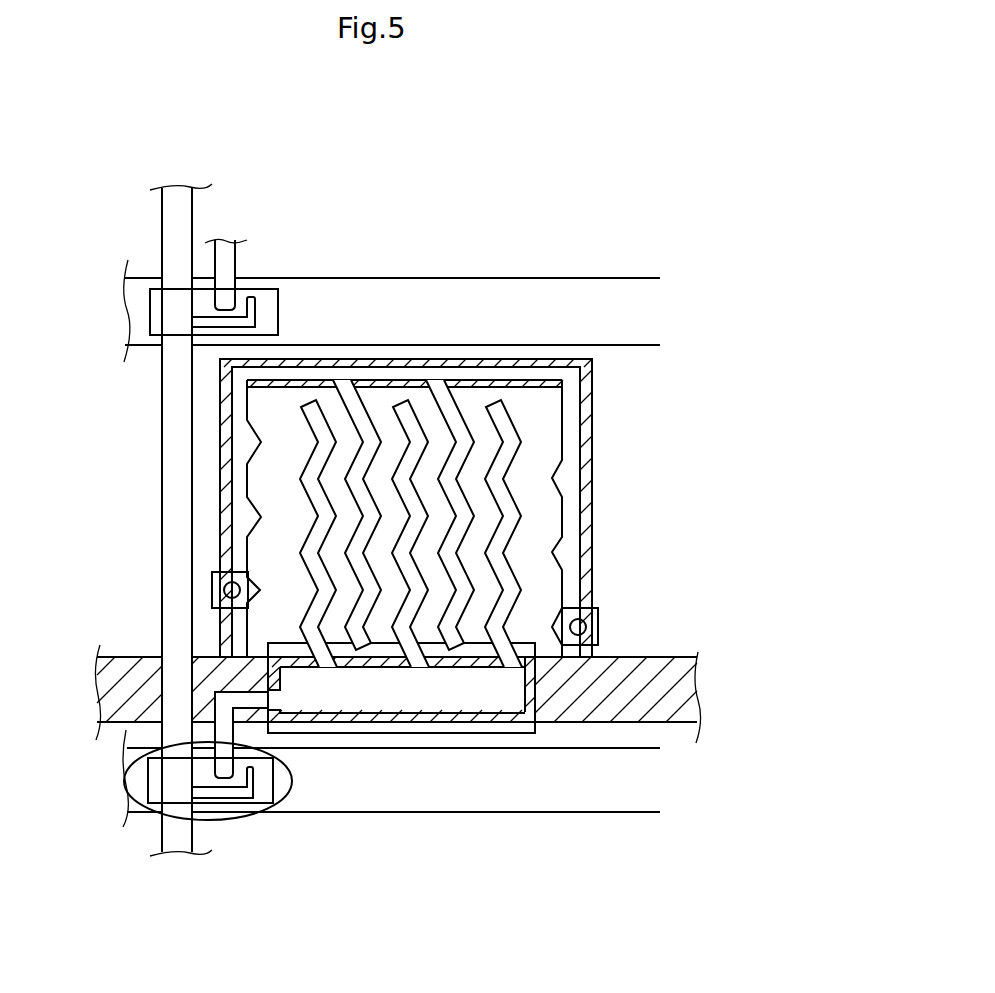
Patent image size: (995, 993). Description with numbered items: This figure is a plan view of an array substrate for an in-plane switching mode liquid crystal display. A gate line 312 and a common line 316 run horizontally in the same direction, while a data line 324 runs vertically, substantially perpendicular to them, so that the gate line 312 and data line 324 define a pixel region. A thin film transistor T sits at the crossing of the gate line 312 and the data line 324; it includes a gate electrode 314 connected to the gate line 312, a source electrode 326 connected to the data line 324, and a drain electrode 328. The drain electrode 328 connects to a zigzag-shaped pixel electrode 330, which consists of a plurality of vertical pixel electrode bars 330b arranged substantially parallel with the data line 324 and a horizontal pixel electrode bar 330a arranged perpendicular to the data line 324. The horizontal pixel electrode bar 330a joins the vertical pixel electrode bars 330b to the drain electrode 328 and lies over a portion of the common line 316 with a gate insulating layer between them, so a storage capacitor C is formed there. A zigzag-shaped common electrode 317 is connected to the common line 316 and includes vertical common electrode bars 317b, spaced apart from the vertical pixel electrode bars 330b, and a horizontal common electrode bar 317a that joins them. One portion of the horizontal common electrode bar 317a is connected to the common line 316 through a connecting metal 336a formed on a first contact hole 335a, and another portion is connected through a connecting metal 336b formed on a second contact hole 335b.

The gate line 312 is at (347, 812).
The gate electrode 314 is at (165, 793).
The common line 316 is at (552, 722).
The common electrode 317 is at (536, 518).
The horizontal common electrode bar 317a is at (532, 383).
The vertical common electrode bars 317b is at (467, 452).
The data line 324 is at (175, 463).
The source electrode 326 is at (257, 813).
The drain electrode 328 is at (160, 760).
The pixel electrode 330 is at (516, 540).
The horizontal pixel electrode bar 330a is at (518, 687).
The vertical pixel electrode bars 330b is at (505, 502).
The first contact hole 335a is at (220, 577).
The second contact hole 335b is at (593, 617).
The connecting metal 336a is at (212, 573).
The connecting metal 336b is at (597, 637).
The thin film transistor T is at (282, 800).
The storage capacitor C is at (455, 733).